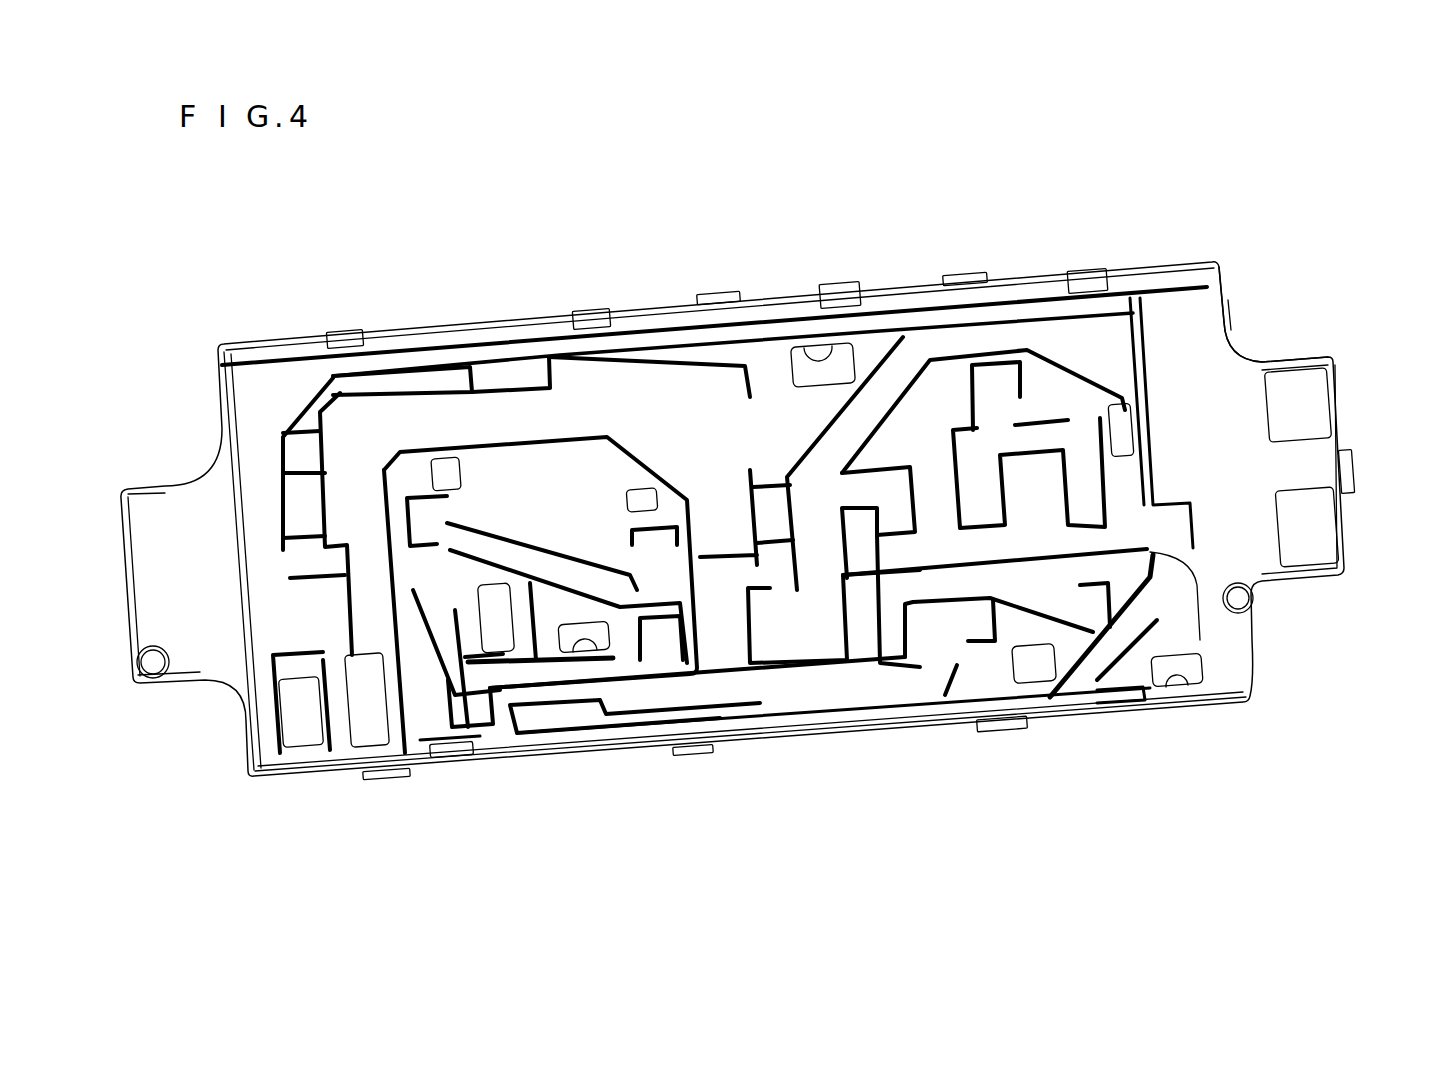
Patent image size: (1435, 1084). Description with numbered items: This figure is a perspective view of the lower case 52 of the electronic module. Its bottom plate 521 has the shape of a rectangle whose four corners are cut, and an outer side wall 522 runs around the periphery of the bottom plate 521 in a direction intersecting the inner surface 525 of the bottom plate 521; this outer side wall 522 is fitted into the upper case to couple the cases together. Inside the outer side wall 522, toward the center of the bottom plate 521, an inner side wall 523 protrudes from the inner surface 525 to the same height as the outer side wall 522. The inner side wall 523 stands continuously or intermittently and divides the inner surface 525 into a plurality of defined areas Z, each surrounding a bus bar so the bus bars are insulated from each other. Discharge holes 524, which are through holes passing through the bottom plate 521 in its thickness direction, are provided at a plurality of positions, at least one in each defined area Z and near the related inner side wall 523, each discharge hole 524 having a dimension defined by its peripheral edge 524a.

The lower case 52 is at (1258, 191).
The bottom plate 521 is at (1229, 315).
The outer side wall 522 is at (1143, 262).
The inner side wall 523 is at (327, 435).
The discharge hole 524 is at (730, 603).
The peripheral edge 524a is at (443, 477).
The inner surface 525 is at (1190, 312).
The defined area Z is at (392, 423).